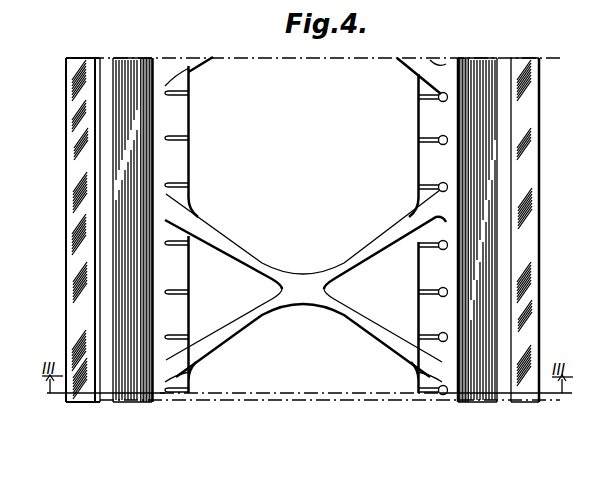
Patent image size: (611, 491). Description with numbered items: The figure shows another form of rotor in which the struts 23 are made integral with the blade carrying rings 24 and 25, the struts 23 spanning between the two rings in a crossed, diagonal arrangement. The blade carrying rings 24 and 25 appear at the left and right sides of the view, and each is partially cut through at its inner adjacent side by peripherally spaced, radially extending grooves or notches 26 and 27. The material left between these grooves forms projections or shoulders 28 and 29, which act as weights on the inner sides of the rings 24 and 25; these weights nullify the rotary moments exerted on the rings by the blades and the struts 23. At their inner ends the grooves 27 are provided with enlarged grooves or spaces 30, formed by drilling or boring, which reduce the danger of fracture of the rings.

The strut 23 is at (261, 263).
The blade carrying ring 24 is at (80, 273).
The blade carrying ring 25 is at (532, 281).
The groove 26 is at (189, 94).
The groove 27 is at (418, 98).
The projection 28 is at (185, 124).
The projection 29 is at (418, 126).
The enlarged groove 30 is at (446, 135).